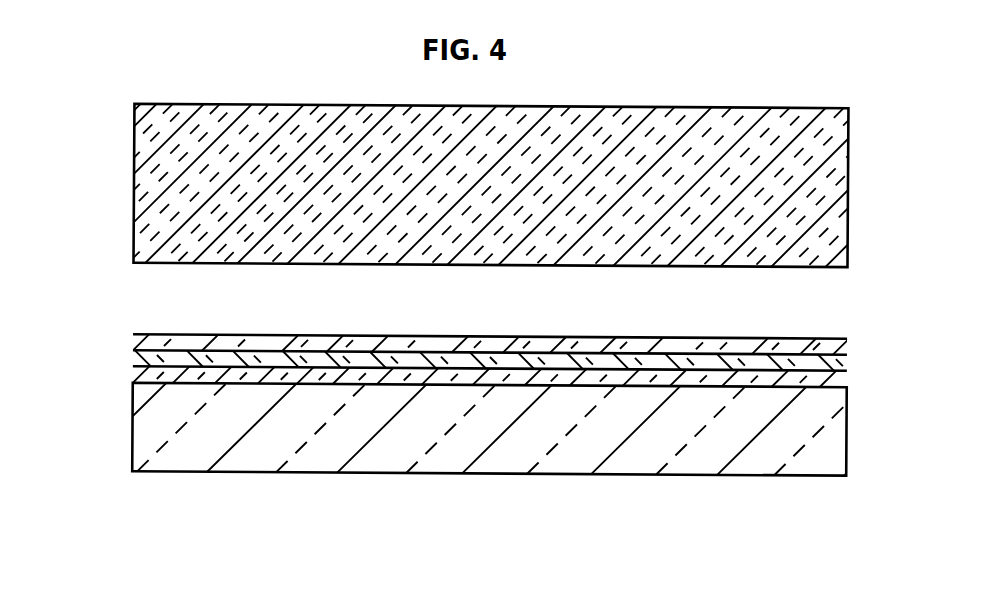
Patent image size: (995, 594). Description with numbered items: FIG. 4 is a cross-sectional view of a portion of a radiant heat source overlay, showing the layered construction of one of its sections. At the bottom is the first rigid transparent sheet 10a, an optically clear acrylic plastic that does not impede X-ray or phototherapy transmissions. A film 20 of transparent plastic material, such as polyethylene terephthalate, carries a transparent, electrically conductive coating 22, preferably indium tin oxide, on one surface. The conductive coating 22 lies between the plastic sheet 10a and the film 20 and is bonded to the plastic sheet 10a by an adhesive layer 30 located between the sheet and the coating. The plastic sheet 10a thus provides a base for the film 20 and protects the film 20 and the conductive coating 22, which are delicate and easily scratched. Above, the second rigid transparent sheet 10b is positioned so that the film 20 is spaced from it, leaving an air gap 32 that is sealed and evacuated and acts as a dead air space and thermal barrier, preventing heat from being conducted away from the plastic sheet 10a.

The first rigid transparent sheet 10a is at (755, 469).
The second rigid transparent sheet 10b is at (140, 182).
The film 20 is at (132, 341).
The electrically conductive coating 22 is at (841, 363).
The adhesive layer 30 is at (133, 373).
The air gap 32 is at (851, 267).